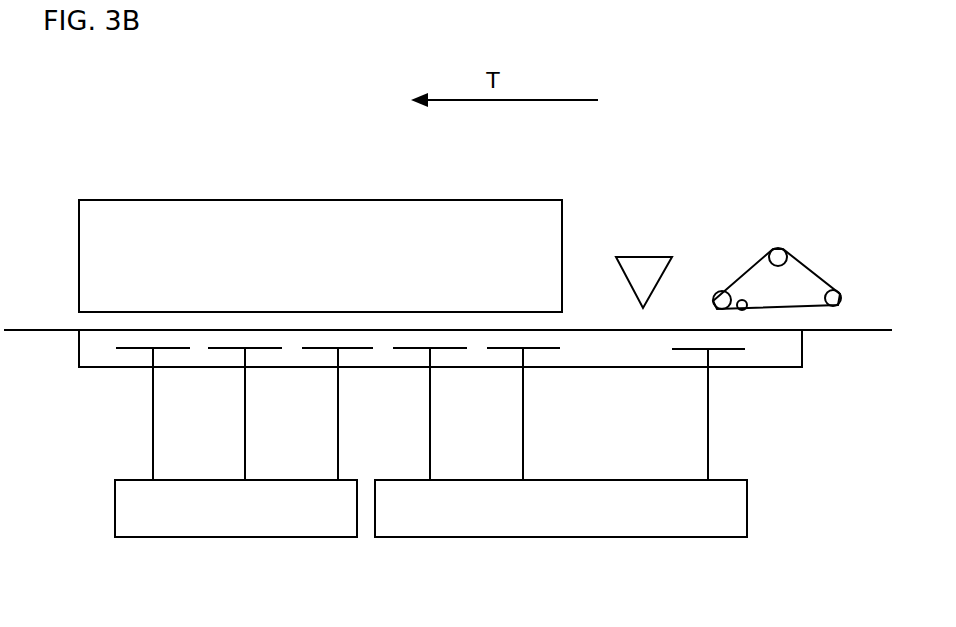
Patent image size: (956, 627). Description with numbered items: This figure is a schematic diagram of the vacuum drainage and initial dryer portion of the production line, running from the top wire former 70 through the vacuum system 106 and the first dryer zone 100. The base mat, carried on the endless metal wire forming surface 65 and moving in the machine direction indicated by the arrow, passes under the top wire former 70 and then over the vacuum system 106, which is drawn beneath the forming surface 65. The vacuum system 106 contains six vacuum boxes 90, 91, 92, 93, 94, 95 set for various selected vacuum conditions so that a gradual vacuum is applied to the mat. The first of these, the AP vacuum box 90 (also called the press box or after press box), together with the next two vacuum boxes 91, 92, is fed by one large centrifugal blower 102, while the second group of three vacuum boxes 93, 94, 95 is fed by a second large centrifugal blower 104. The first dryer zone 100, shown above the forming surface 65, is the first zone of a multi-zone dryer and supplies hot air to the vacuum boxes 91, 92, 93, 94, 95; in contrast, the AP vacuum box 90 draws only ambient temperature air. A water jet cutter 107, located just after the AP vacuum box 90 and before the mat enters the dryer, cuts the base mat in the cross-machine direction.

The first dryer zone 100 is at (338, 264).
The endless metal wire forming surface 65 is at (580, 326).
The water jet cutter 107 is at (654, 257).
The top wire former 70 is at (753, 263).
The vacuum system 106 is at (777, 352).
The vacuum box 95 is at (135, 348).
The vacuum box 94 is at (215, 349).
The vacuum box 93 is at (314, 348).
The vacuum box 92 is at (420, 348).
The vacuum box 91 is at (542, 348).
The after press (AP) vacuum box 90 is at (690, 349).
The centrifugal blower 104 is at (216, 515).
The centrifugal blower 102 is at (540, 515).